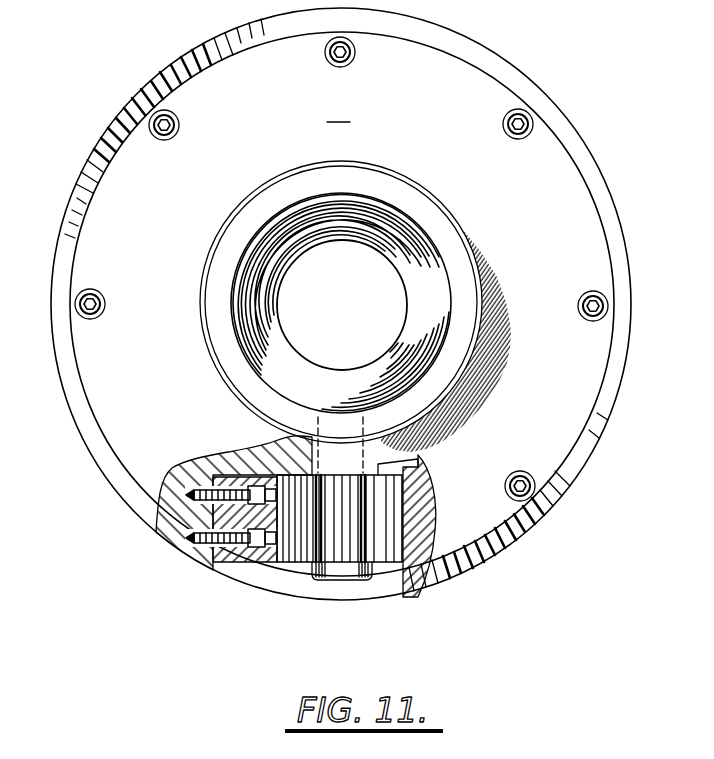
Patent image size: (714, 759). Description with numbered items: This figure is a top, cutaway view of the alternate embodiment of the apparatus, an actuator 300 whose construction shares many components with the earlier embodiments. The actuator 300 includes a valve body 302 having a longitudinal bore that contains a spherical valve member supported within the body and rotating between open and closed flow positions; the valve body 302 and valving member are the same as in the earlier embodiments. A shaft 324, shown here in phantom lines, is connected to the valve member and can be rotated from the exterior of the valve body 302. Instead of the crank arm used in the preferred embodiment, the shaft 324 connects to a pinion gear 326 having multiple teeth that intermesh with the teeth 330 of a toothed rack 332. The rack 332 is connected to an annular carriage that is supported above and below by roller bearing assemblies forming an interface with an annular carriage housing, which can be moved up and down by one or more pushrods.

The actuator 300 is at (86, 561).
The valve body 302 is at (430, 278).
The shaft 324 is at (383, 456).
The pinion gear 326 is at (410, 588).
The teeth 330 is at (292, 564).
The toothed rack 332 is at (230, 563).